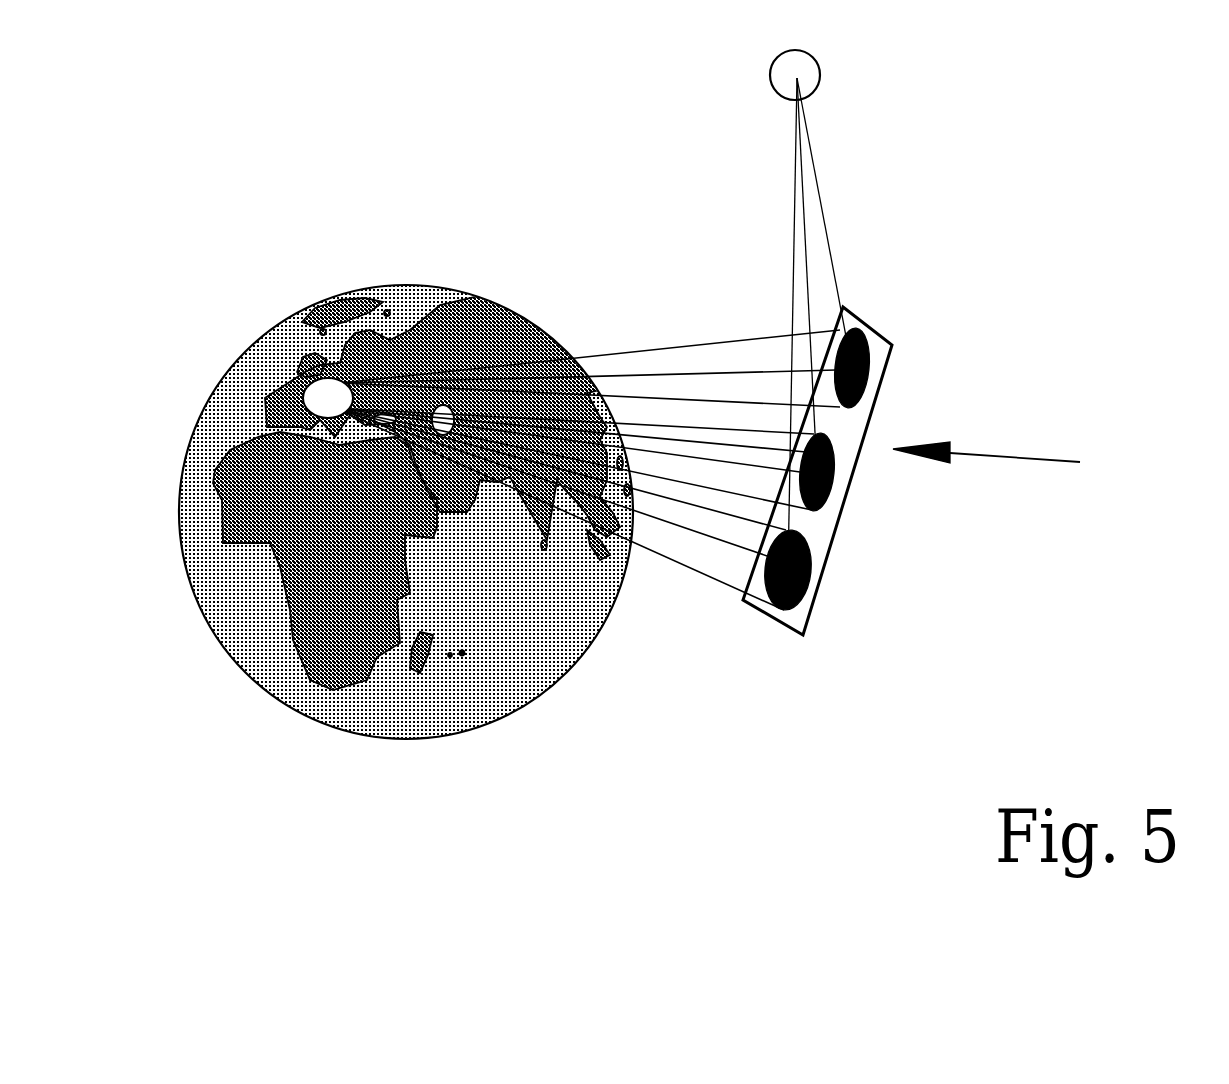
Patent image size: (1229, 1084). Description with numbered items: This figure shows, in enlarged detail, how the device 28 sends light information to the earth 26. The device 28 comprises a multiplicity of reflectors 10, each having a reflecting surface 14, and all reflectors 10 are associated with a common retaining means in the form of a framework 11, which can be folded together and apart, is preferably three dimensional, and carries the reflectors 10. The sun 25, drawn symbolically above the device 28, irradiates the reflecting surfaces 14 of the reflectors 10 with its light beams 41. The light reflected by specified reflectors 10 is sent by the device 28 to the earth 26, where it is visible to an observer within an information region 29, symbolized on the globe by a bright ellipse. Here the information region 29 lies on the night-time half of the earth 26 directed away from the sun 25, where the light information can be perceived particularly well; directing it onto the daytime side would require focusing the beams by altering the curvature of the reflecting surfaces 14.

The reflector 10 is at (900, 508).
The reflecting surface 14 is at (870, 370).
The framework 11 is at (813, 620).
The sun 25 is at (820, 75).
The earth 26 is at (475, 688).
The device 28 is at (1017, 466).
The information region 29 is at (328, 398).
The light beams 41 is at (795, 225).